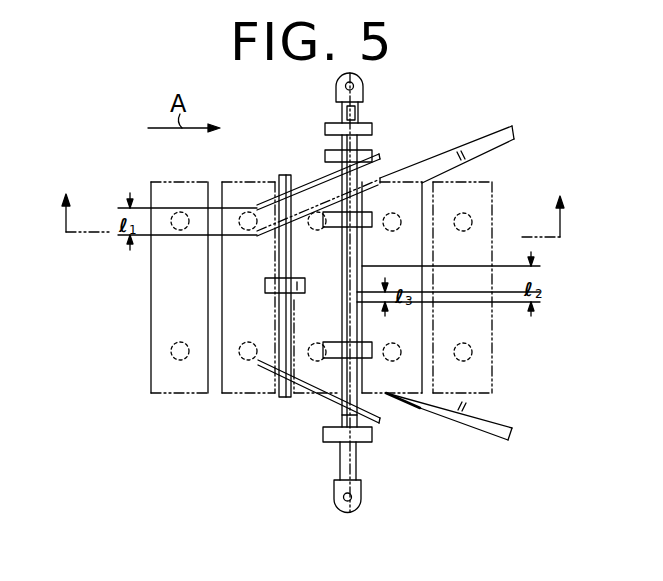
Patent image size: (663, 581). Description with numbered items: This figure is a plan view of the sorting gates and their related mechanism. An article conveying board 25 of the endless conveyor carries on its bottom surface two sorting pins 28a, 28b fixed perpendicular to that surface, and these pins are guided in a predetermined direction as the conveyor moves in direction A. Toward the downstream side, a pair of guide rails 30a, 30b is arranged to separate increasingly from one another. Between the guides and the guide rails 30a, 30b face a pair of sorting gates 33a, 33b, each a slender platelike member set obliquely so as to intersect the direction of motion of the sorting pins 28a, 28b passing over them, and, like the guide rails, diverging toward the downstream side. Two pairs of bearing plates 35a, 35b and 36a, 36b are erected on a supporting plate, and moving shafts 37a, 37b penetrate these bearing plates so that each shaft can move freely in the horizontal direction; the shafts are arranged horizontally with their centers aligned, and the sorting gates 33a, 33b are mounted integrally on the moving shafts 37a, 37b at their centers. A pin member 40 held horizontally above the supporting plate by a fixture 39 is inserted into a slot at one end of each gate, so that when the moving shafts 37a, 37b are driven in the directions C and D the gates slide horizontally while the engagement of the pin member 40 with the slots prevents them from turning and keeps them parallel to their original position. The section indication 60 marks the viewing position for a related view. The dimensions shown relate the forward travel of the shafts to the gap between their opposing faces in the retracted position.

The article conveying board 25 is at (232, 318).
The sorting pin 28a is at (245, 214).
The sorting pin 28b is at (246, 360).
The guide rail 30a is at (486, 142).
The guide rail 30b is at (483, 430).
The sorting gate 33a is at (322, 206).
The sorting gate 33b is at (310, 388).
The bearing plate 35a is at (363, 214).
The bearing plate 35b is at (330, 126).
The bearing plate 36a is at (372, 358).
The bearing plate 36b is at (323, 437).
The moving shaft 37a is at (358, 150).
The moving shaft 37b is at (352, 422).
The fixture 39 is at (297, 284).
The pin member 40 is at (283, 318).
The section line arrows 60 is at (311, 203).